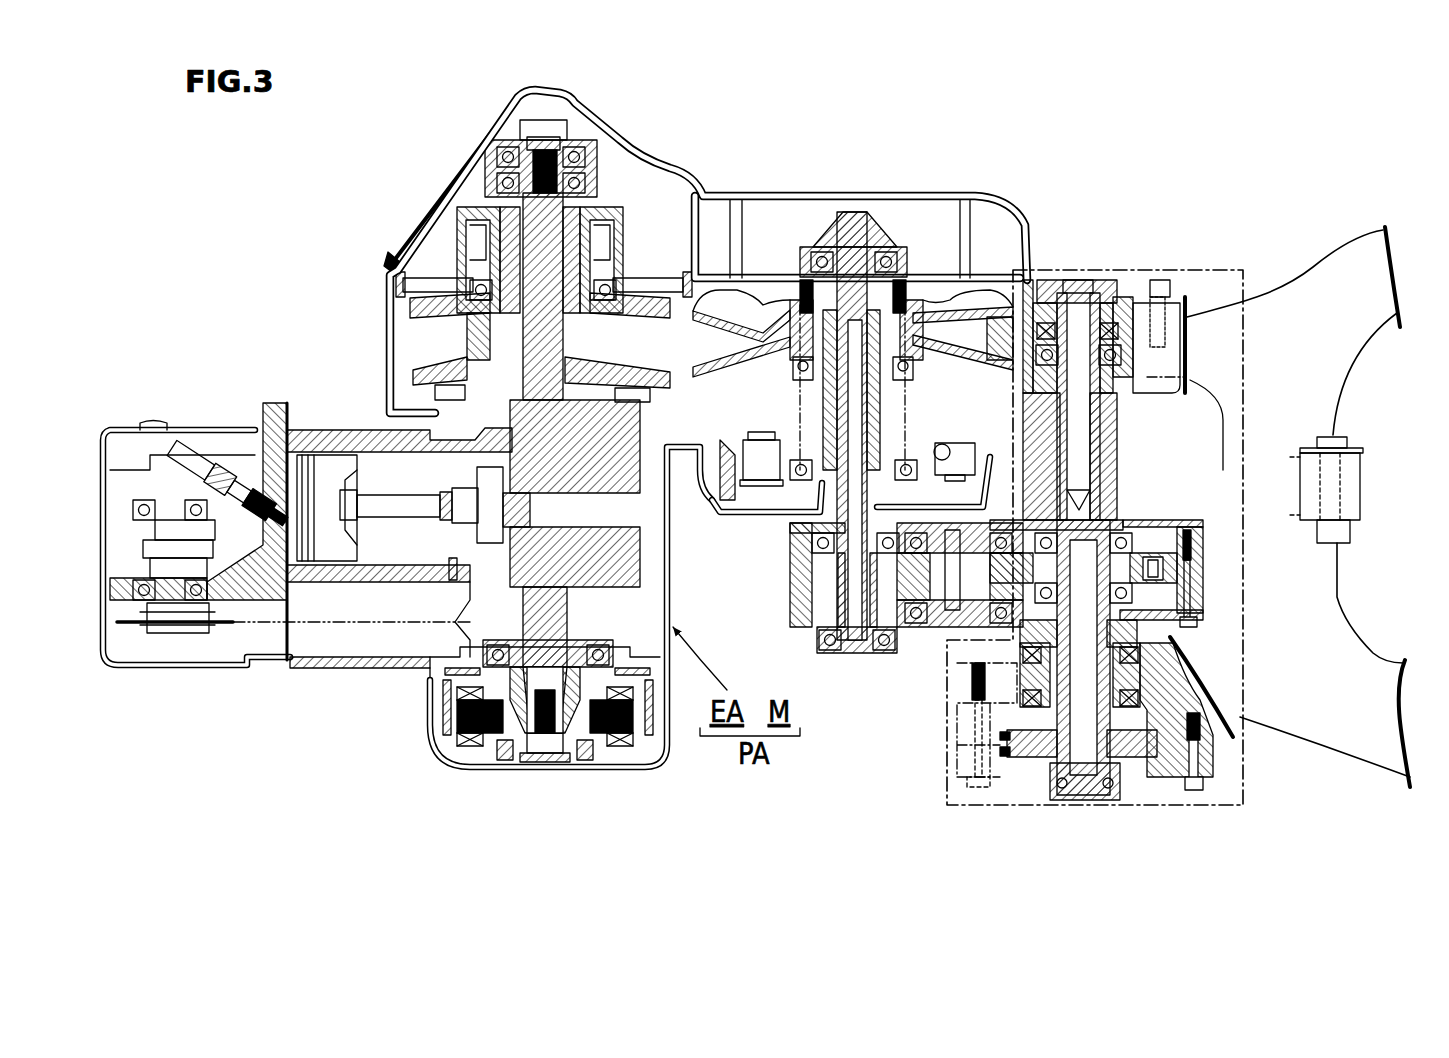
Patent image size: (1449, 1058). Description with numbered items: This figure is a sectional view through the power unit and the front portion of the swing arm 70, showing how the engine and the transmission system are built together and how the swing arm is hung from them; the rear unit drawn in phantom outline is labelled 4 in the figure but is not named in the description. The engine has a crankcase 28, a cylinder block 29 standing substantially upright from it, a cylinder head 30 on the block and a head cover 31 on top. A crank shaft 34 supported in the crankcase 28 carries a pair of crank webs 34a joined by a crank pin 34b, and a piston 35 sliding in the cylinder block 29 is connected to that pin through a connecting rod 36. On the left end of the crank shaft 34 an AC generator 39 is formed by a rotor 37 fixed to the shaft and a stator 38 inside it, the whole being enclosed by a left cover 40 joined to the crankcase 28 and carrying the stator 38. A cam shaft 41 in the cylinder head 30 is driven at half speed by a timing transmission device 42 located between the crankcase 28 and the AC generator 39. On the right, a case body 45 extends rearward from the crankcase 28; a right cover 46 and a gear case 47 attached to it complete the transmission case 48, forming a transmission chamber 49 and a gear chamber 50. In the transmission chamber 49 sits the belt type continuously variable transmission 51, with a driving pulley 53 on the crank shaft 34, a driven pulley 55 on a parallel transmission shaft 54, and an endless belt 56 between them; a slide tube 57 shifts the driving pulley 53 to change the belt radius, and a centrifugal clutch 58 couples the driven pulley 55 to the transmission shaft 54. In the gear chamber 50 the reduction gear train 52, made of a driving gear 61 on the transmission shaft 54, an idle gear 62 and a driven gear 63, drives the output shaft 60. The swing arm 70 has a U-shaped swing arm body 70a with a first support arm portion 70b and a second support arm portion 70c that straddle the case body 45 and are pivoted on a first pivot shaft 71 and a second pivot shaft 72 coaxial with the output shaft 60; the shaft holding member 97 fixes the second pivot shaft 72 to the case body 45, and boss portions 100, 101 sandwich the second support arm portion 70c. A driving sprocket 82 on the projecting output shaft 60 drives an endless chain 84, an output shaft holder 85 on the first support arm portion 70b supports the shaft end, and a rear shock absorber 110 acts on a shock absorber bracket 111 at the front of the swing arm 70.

The power transmission unit 4 is at (1240, 257).
The crankcase 28 is at (663, 580).
The cylinder block 29 is at (340, 430).
The cylinder head 30 is at (197, 430).
The head cover 31 is at (113, 432).
The crank shaft 34 is at (543, 220).
The crank webs 34a is at (647, 533).
The crank pin 34b is at (467, 533).
The piston 35 is at (298, 570).
The connecting rod 36 is at (393, 503).
The rotor 37 is at (447, 720).
The stator 38 is at (475, 745).
The AC generator 39 is at (640, 735).
The left cover 40 is at (600, 763).
The cam shaft 41 is at (177, 613).
The timing transmission device 42 is at (133, 636).
The case body 45 is at (1155, 545).
The right cover 46 is at (930, 270).
The gear case 47 is at (1187, 600).
The transmission case 48 is at (1010, 267).
The transmission chamber 49 is at (874, 435).
The gear chamber 50 is at (818, 560).
The belt type continuously variable transmission 51 is at (432, 375).
The reduction gear train 52 is at (1155, 543).
The driving pulley 53 is at (455, 228).
The transmission shaft 54 is at (835, 400).
The driven pulley 55 is at (765, 300).
The endless belt 56 is at (470, 350).
The slide tube 57 is at (437, 297).
The centrifugal clutch 58 is at (963, 427).
The output shaft 60 is at (1140, 683).
The driving gear 61 is at (820, 560).
The idle gear 62 is at (893, 587).
The driven gear 63 is at (1163, 570).
The swing arm 70 is at (1323, 752).
The swing arm body 70a is at (1327, 650).
The first support arm portion 70b is at (1017, 703).
The second support arm portion 70c is at (1130, 297).
The first pivot shaft 71 is at (1133, 703).
The second pivot shaft 72 is at (1097, 277).
The driving sprocket 82 is at (1127, 753).
The endless chain 84 is at (1017, 740).
The output shaft holder 85 is at (1053, 777).
The shaft holding member 97 is at (1190, 307).
The boss portion 100 is at (1187, 353).
The boss portion 101 is at (1206, 425).
The rear shock absorber 110 is at (1355, 490).
The shock absorber bracket 111 is at (1363, 453).